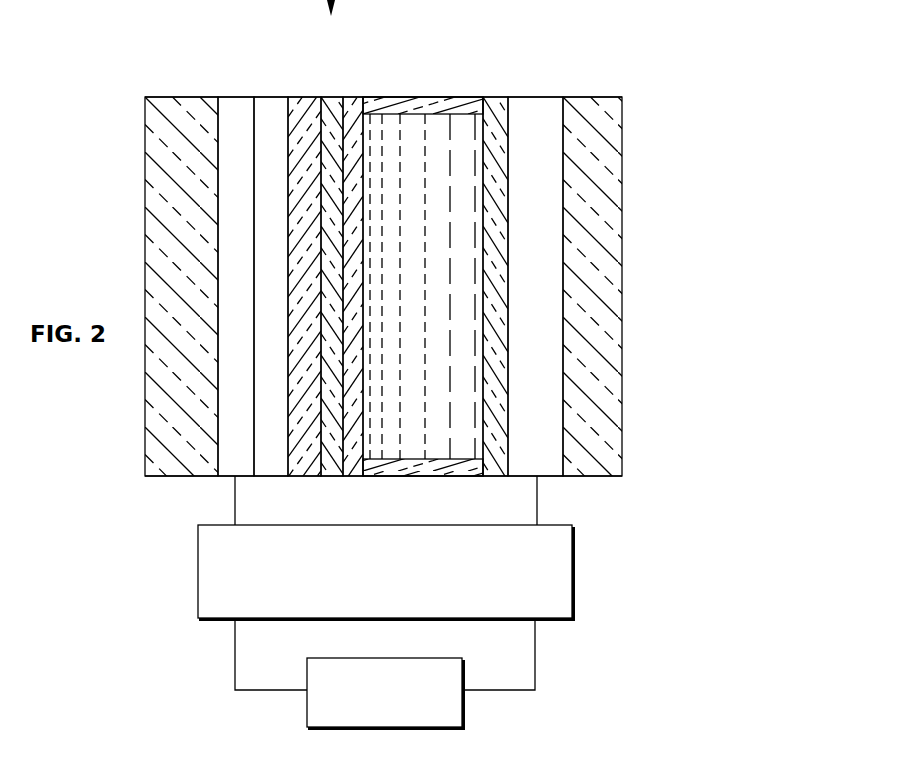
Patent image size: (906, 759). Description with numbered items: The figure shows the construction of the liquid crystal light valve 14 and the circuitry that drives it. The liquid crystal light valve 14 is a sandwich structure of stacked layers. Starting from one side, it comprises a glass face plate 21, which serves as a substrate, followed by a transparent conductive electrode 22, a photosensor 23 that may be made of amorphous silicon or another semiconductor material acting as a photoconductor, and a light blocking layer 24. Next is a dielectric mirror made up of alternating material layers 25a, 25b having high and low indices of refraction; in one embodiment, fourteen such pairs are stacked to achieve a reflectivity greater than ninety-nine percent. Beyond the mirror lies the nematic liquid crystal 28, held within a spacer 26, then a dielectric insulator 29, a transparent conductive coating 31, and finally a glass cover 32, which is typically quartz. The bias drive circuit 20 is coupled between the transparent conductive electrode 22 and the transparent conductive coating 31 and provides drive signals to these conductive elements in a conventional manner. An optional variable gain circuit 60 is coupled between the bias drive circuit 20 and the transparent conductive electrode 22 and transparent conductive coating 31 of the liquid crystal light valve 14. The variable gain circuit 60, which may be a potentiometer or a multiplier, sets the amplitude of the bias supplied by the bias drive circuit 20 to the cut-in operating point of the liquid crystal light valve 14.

The liquid crystal light valve 14 is at (731, 92).
The glass face plate 21 is at (180, 97).
The transparent conductive electrode 22 is at (232, 97).
The photosensor 23 is at (270, 97).
The light blocking layer 24 is at (300, 97).
The high index of refraction material layer 25a is at (331, 97).
The low index of refraction material layer 25b is at (357, 97).
The spacer 26 is at (416, 97).
The nematic liquid crystal 28 is at (462, 125).
The dielectric insulator 29 is at (494, 97).
The transparent conductive coating 31 is at (539, 97).
The glass cover 32 is at (592, 97).
The variable gain circuit 60 is at (556, 525).
The bias drive circuit 20 is at (420, 658).